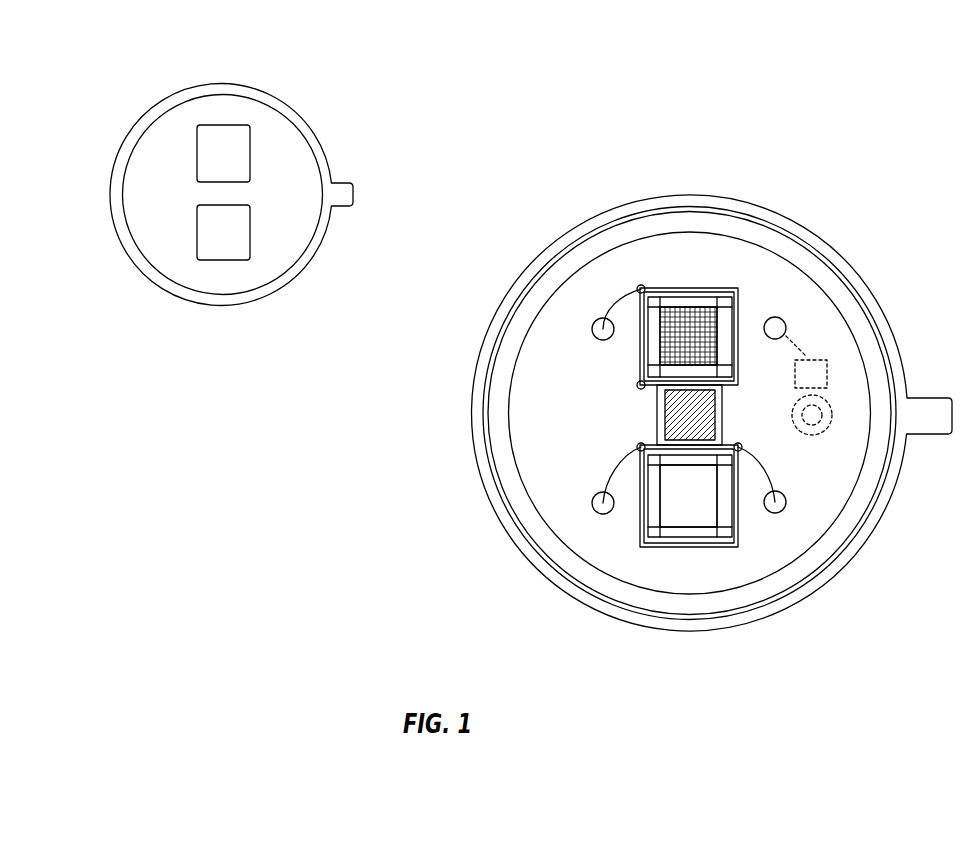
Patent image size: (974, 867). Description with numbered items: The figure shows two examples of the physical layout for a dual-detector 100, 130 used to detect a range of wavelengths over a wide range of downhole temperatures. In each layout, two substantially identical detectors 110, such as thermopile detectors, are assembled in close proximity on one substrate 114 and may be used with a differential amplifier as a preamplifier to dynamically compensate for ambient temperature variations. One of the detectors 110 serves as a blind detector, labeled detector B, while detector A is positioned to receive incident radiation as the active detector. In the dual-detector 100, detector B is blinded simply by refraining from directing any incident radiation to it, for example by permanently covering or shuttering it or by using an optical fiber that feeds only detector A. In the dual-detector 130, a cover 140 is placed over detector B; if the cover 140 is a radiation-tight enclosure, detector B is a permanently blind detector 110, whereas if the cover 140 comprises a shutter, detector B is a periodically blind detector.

The dual-detector 100 is at (172, 60).
The detector 110 is at (240, 152).
The substrate 114 is at (222, 273).
The dual-detector 130 is at (545, 138).
The cover 140 is at (700, 310).